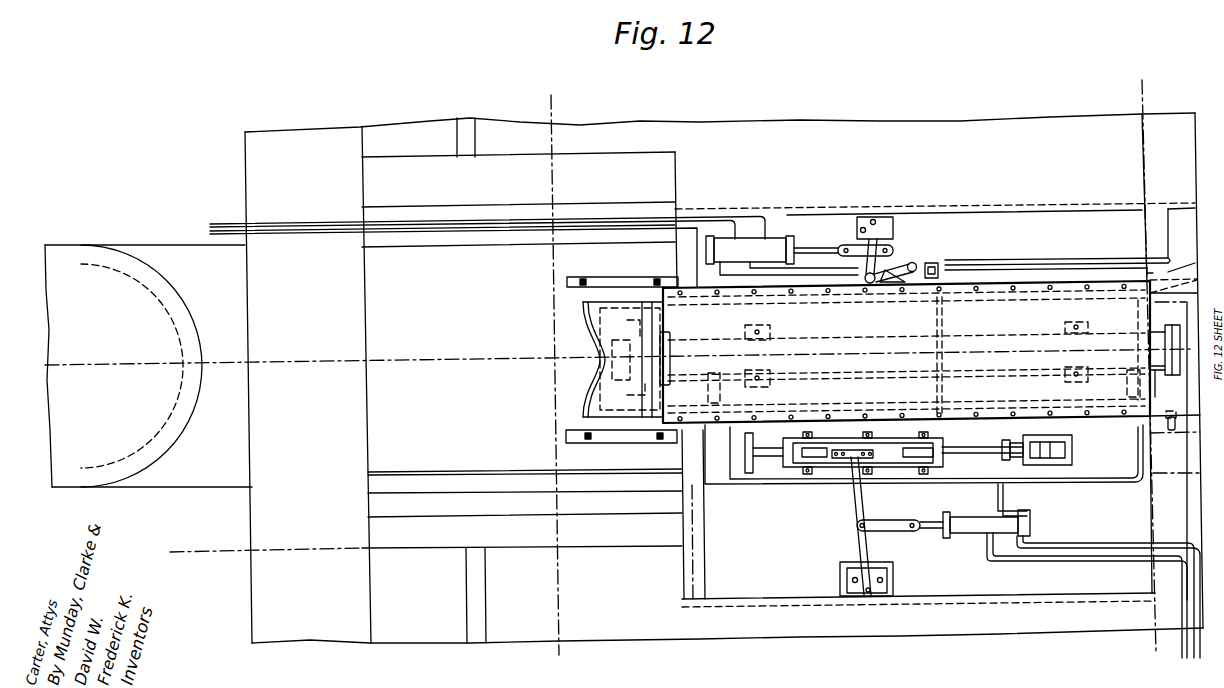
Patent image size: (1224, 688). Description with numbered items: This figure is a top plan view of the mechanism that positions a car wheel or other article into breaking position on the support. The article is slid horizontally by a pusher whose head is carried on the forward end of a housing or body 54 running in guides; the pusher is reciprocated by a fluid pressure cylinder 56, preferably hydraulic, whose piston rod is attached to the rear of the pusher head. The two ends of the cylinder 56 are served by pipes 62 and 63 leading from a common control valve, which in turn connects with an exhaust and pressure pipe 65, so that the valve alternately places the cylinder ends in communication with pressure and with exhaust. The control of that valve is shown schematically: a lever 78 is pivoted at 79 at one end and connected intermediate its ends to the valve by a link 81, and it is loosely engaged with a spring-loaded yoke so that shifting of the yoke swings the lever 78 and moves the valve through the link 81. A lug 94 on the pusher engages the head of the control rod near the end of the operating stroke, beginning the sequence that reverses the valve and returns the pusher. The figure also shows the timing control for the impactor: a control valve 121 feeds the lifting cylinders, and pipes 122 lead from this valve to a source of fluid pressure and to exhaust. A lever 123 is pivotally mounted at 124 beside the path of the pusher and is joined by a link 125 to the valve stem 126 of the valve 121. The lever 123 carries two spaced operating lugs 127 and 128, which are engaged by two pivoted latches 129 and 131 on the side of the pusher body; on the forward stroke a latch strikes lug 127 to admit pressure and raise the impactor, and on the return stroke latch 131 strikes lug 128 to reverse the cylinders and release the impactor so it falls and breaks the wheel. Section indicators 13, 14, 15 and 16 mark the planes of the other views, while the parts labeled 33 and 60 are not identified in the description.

The section line 13- 13 is at (40, 353).
The section line 14- 14 is at (172, 540).
The section line 15- 15 is at (1156, 96).
The section line 16- 16 is at (558, 105).
The end shell 33 is at (627, 288).
The housing or body 54 is at (808, 392).
The fluid pressure cylinder 56 is at (1165, 342).
The cylinder 60 is at (976, 525).
The pipe 62 is at (824, 488).
The pipe 63 is at (1140, 448).
The exhaust and pressure pipe 65 is at (1177, 556).
The lever 78 is at (870, 545).
The pivot 79 is at (868, 597).
The link 81 is at (886, 530).
The lug 94 is at (1168, 425).
The control valve 121 is at (736, 250).
The pipes 122 is at (982, 270).
The lever 123 is at (882, 232).
The pivot 124 is at (871, 218).
The link 125 is at (867, 265).
The valve stem 126 is at (808, 247).
The operating lug 127 is at (893, 274).
The operating lug 128 is at (932, 263).
The pivoted latch 129 is at (915, 268).
The pivoted latch 131 is at (1147, 261).